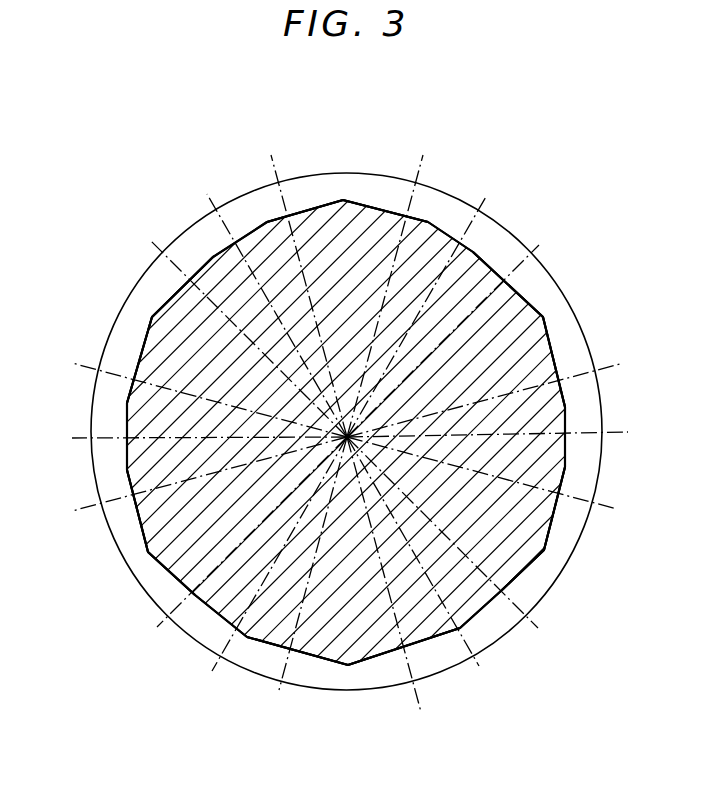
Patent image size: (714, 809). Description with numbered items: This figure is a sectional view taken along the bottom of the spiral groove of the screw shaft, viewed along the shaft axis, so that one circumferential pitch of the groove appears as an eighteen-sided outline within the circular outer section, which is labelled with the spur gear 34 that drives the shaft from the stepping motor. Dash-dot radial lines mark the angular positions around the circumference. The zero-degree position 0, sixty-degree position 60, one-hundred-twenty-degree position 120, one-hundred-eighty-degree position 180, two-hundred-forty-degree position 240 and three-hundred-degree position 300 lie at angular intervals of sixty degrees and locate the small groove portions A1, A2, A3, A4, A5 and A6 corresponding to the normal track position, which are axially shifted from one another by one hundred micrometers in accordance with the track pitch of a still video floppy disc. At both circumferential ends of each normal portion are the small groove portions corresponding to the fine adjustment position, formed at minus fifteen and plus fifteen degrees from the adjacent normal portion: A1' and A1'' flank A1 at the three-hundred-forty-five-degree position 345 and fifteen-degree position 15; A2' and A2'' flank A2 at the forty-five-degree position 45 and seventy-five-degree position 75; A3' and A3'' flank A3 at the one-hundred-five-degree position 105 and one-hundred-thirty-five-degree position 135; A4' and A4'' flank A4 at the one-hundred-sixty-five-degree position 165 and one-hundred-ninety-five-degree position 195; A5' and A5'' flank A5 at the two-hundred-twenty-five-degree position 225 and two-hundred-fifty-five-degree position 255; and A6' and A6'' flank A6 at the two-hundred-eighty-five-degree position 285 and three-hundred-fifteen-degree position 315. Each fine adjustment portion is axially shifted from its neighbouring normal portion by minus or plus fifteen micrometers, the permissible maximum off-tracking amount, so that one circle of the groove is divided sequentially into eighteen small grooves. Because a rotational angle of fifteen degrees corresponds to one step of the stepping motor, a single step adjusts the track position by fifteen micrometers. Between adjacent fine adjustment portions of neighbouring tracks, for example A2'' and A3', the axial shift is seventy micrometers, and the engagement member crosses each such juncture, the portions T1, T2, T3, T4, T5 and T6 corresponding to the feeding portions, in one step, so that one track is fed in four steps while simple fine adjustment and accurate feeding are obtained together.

The spur gear 34 is at (196, 643).
The zero-degree angular position 0 is at (500, 433).
The fifteen-degree angular position 15 is at (500, 389).
The forty-five-degree angular position 45 is at (455, 319).
The sixty-degree angular position 60 is at (426, 299).
The seventy-five-degree angular position 75 is at (390, 282).
The one-hundred-five-degree angular position 105 is at (301, 282).
The one-hundred-twenty-degree angular position 120 is at (264, 301).
The one-hundred-thirty-five-degree angular position 135 is at (232, 320).
The one-hundred-sixty-five-degree angular position 165 is at (186, 388).
The one-hundred-eighty-degree angular position 180 is at (182, 436).
The one-hundred-ninety-five-degree angular position 195 is at (184, 481).
The two-hundred-twenty-five-degree angular position 225 is at (237, 551).
The two-hundred-forty-degree angular position 240 is at (268, 571).
The two-hundred-fifty-five-degree angular position 255 is at (301, 585).
The two-hundred-eighty-five-degree angular position 285 is at (400, 585).
The three-hundred-degree angular position 300 is at (435, 570).
The three-hundred-fifteen-degree angular position 315 is at (469, 547).
The three-hundred-forty-five-degree angular position 345 is at (508, 481).
The small groove portion A1 is at (627, 422).
The small groove portion A1' is at (607, 518).
The small groove portion A1'' is at (608, 348).
The small groove portion A2 is at (490, 210).
The small groove portion A2' is at (547, 264).
The small groove portion A2'' is at (415, 169).
The small groove portion A3 is at (240, 189).
The small groove portion A3' is at (305, 160).
The small groove portion A3'' is at (148, 270).
The small groove portion A4 is at (71, 427).
The small groove portion A4' is at (95, 351).
The small groove portion A4'' is at (93, 519).
The small groove portion A5 is at (221, 673).
The small groove portion A5' is at (139, 598).
The small groove portion A5'' is at (297, 708).
The small groove portion A6 is at (516, 647).
The small groove portion A6' is at (404, 703).
The small groove portion A6'' is at (571, 593).
The juncture portion T1 is at (543, 317).
The juncture portion T2 is at (345, 200).
The juncture portion T3 is at (152, 317).
The juncture portion T4 is at (148, 553).
The juncture portion T5 is at (348, 665).
The juncture portion T6 is at (545, 551).